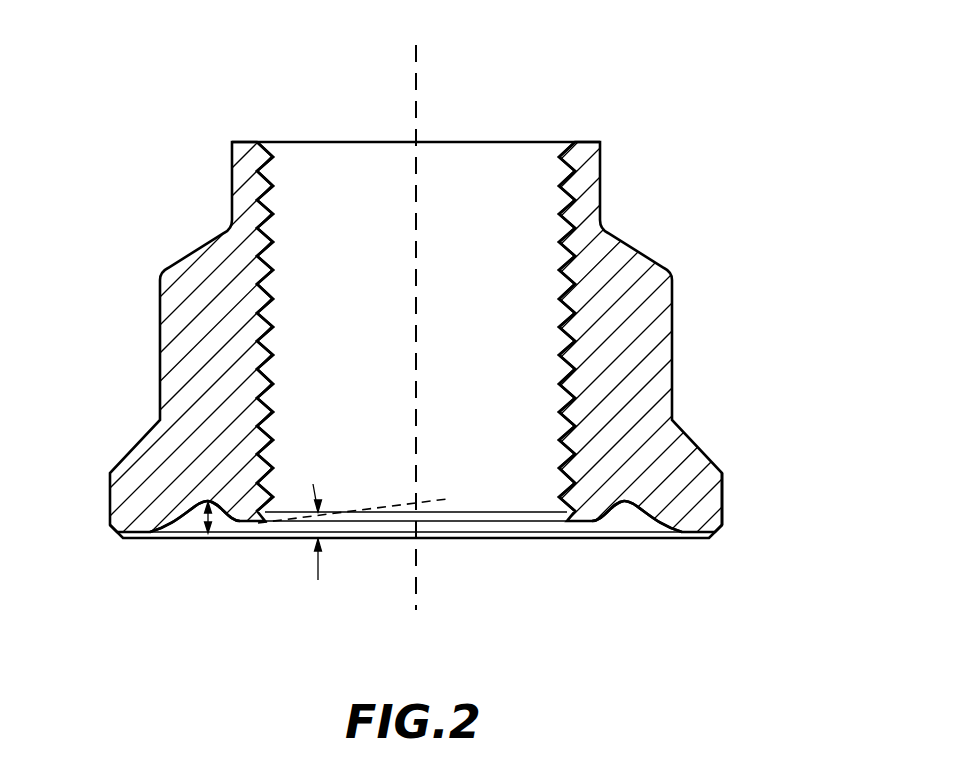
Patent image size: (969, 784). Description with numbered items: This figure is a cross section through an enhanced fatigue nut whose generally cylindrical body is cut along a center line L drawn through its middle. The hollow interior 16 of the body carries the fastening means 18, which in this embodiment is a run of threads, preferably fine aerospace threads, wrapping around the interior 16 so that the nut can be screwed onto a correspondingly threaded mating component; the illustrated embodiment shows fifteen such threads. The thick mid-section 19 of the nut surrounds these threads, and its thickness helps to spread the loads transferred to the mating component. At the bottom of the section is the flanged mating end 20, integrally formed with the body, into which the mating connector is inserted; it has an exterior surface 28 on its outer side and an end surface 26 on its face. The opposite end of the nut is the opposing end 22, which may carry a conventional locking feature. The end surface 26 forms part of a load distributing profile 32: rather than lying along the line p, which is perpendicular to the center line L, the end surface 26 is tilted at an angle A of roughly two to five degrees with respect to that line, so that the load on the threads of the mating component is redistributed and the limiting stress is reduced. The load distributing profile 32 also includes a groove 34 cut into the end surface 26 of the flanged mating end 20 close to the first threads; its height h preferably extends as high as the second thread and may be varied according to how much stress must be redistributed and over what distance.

The interior 16 is at (560, 210).
The fastening means 18 is at (272, 197).
The mid-section 19 is at (173, 327).
The flanged mating end 20 is at (687, 480).
The opposing end 22 is at (584, 141).
The end surface 26 is at (675, 540).
The exterior surface 28 is at (723, 491).
The load distributing profile 32 is at (607, 552).
The groove 34 is at (623, 513).
The line L is at (417, 58).
The height of the groove h is at (205, 522).
The line P p is at (220, 540).
The angle A is at (322, 520).